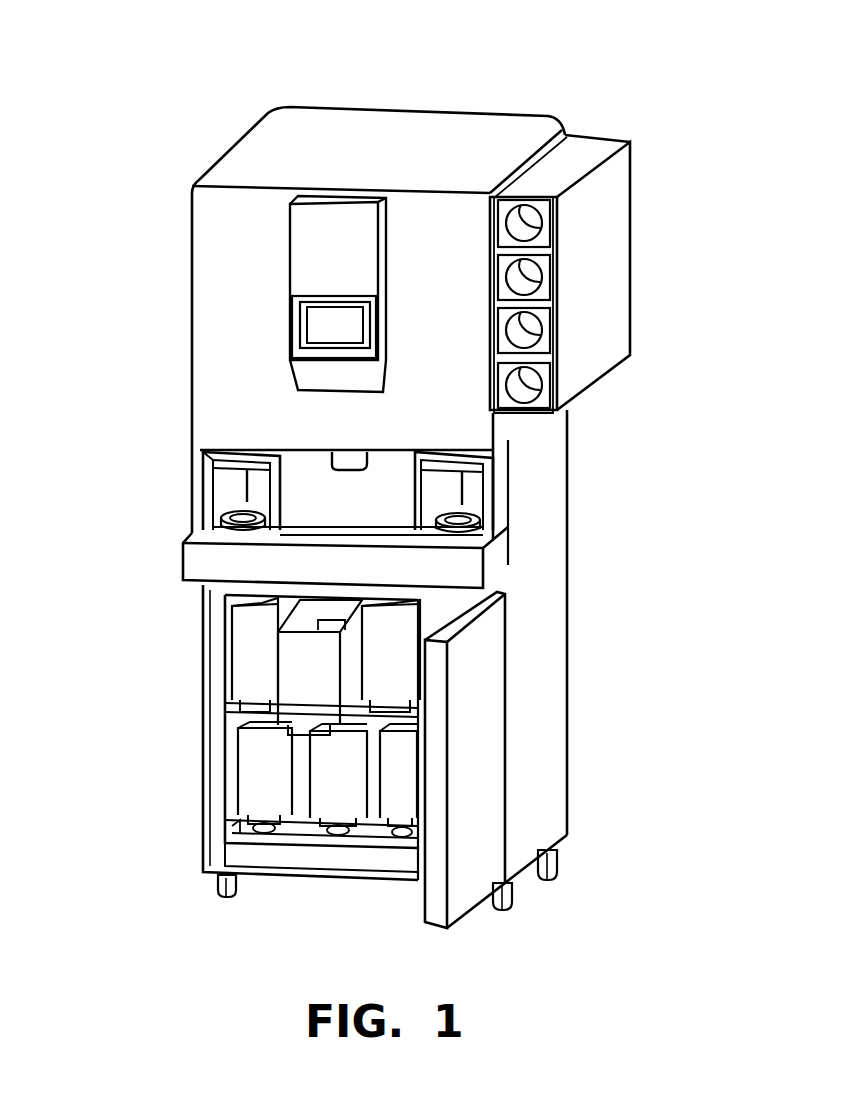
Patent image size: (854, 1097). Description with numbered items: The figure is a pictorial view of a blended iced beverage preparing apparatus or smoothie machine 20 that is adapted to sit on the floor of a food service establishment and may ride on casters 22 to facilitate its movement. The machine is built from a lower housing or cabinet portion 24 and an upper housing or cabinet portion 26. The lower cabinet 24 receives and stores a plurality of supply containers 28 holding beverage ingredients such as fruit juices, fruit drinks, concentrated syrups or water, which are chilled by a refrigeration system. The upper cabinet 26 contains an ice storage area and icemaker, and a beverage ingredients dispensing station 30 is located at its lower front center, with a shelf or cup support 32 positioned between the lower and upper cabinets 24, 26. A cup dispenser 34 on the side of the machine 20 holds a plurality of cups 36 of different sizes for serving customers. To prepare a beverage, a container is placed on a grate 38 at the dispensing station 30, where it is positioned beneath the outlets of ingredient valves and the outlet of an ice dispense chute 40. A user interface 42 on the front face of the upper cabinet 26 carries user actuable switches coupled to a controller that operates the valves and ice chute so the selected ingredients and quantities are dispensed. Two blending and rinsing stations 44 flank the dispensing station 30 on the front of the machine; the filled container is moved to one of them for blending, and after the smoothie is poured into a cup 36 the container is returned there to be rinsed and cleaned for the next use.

The blended iced beverage preparing apparatus 20 is at (666, 84).
The casters 22 is at (540, 870).
The lower housing or cabinet portion 24 is at (210, 748).
The upper housing or cabinet portion 26 is at (200, 360).
The supply containers 28 is at (257, 778).
The beverage ingredients dispensing station 30 is at (320, 495).
The shelf or cup support 32 is at (481, 558).
The cup dispenser 34 is at (605, 250).
The cups 36 is at (517, 395).
The grate 38 is at (333, 528).
The ice dispense chute 40 is at (352, 457).
The user interface 42 is at (326, 325).
The blending and rinsing stations 44 is at (250, 472).